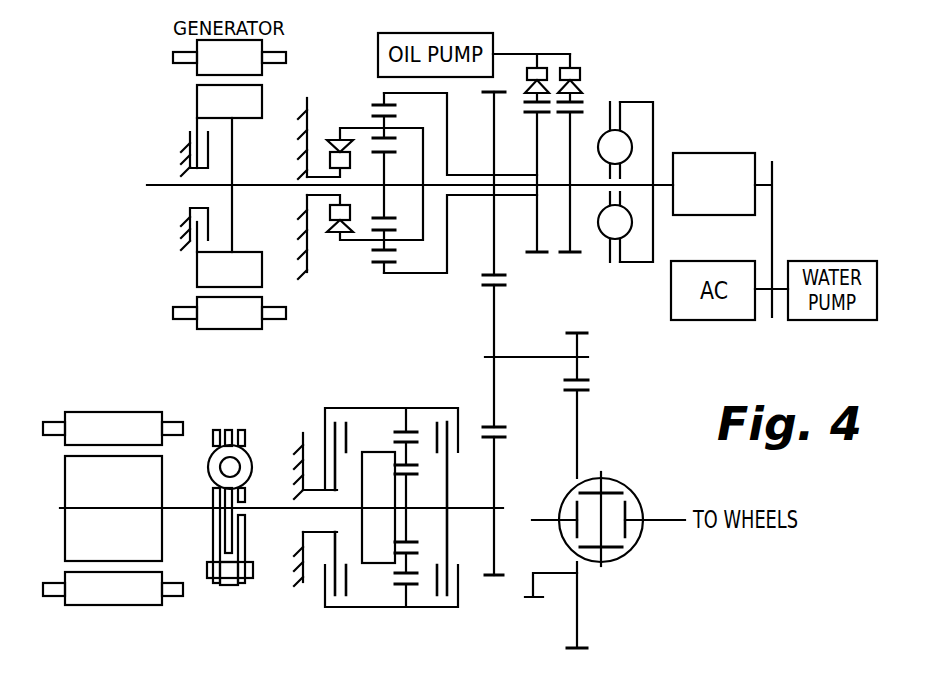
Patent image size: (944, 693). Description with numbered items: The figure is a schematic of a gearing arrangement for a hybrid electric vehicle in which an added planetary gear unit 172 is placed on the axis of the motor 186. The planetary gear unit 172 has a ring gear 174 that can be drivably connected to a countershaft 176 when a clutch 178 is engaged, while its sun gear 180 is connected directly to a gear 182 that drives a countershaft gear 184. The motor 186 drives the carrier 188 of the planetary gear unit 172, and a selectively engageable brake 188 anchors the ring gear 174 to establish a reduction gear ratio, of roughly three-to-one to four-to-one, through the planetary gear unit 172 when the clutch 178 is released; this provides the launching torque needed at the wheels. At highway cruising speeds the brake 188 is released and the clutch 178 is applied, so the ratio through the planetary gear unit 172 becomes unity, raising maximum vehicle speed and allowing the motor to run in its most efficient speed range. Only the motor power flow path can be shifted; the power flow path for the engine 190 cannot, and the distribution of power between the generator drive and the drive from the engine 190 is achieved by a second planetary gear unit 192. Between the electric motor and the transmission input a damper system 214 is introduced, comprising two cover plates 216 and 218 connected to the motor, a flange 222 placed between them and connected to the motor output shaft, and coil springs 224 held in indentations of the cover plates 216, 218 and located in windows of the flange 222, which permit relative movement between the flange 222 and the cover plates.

The planetary gear unit 172 is at (373, 607).
The ring gear 174 is at (402, 426).
The countershaft 176 is at (532, 357).
The clutch 178 is at (459, 433).
The sun gear 180 is at (407, 483).
The gear 182 is at (495, 463).
The countershaft gear 184 is at (495, 393).
The motor 186 is at (87, 470).
The brake 188 is at (330, 440).
The engine 190 is at (724, 153).
The planetary gear unit 192 is at (384, 93).
The damper system 214 is at (232, 583).
The cover plate 216 is at (248, 553).
The cover plate 218 is at (222, 553).
The flange 222 is at (229, 548).
The coil springs 224 is at (208, 467).